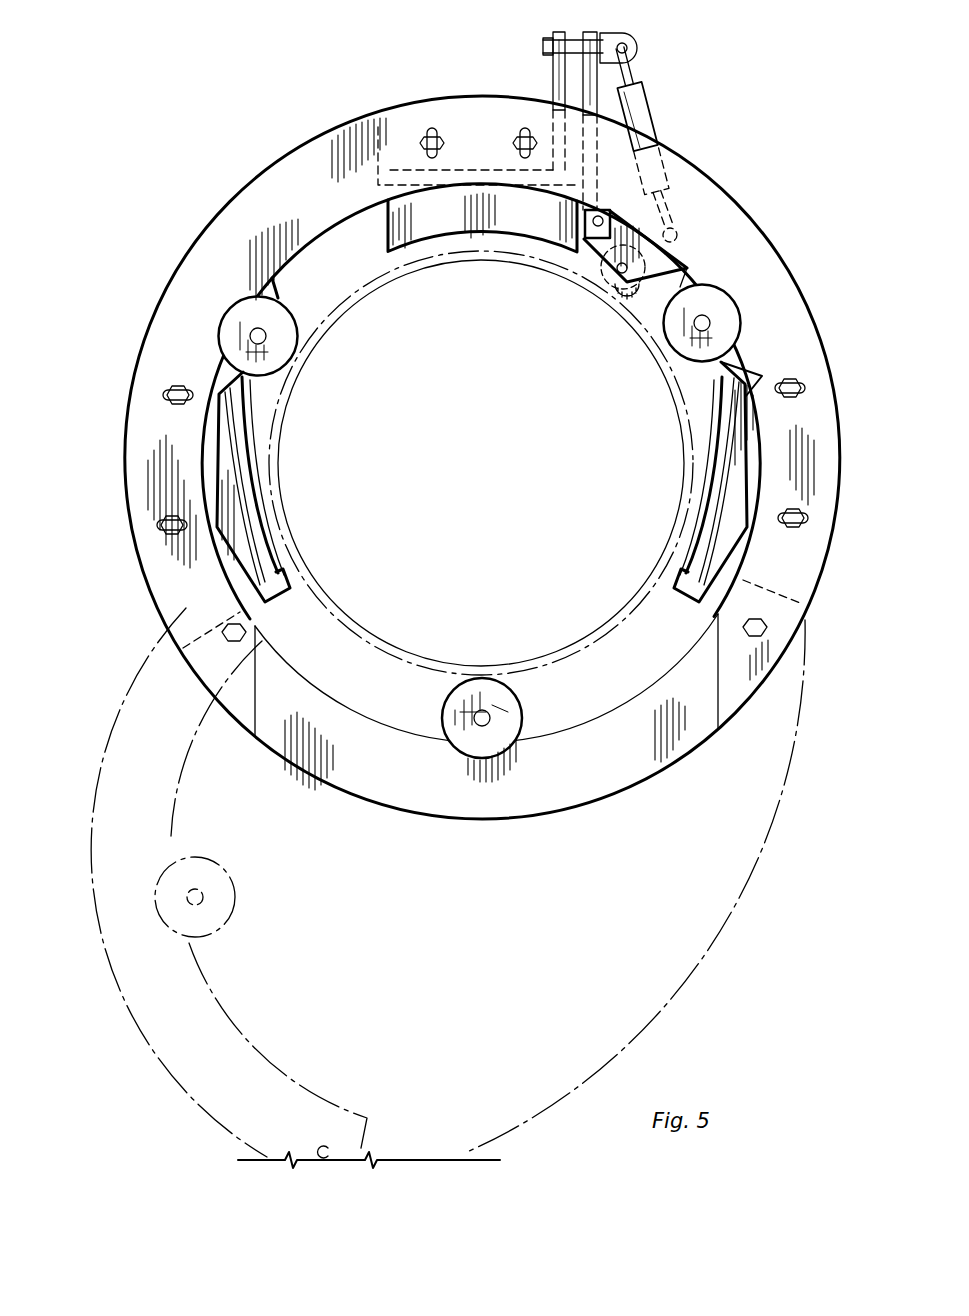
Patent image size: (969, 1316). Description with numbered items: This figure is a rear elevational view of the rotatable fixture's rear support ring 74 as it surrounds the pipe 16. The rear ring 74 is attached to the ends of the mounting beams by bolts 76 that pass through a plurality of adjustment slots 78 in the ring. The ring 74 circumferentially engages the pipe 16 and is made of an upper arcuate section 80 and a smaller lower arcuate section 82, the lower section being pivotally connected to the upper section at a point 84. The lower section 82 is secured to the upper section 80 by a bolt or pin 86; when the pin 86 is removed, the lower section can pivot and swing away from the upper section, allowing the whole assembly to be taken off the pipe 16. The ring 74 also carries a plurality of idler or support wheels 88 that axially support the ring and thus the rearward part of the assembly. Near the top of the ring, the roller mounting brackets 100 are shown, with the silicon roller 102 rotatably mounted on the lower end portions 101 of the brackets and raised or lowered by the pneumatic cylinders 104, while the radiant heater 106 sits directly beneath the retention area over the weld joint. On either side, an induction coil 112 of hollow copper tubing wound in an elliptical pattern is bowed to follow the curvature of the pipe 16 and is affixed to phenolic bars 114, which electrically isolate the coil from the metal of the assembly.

The pipe 16 is at (333, 312).
The rear support ring 74 is at (805, 300).
The bolts 76 is at (438, 132).
The adjustment slots 78 is at (428, 140).
The upper arcuate section 80 is at (256, 198).
The lower arcuate section 82 is at (538, 805).
The pivot point 84 is at (227, 635).
The bolt or pin 86 is at (766, 628).
The idler or support wheels 88 is at (287, 340).
The roller mounting brackets 100 is at (590, 33).
The lower end portions 101 is at (597, 240).
The silicon roller 102 is at (626, 287).
The pneumatic cylinders 104 is at (648, 112).
The radiant heater 106 is at (422, 222).
The induction coil 112 is at (243, 505).
The phenolic bars 114 is at (228, 452).